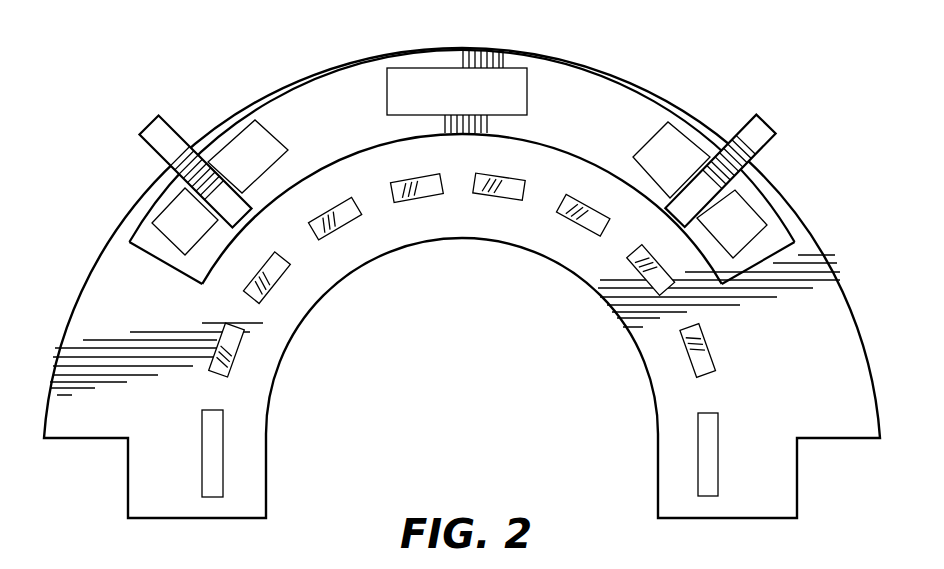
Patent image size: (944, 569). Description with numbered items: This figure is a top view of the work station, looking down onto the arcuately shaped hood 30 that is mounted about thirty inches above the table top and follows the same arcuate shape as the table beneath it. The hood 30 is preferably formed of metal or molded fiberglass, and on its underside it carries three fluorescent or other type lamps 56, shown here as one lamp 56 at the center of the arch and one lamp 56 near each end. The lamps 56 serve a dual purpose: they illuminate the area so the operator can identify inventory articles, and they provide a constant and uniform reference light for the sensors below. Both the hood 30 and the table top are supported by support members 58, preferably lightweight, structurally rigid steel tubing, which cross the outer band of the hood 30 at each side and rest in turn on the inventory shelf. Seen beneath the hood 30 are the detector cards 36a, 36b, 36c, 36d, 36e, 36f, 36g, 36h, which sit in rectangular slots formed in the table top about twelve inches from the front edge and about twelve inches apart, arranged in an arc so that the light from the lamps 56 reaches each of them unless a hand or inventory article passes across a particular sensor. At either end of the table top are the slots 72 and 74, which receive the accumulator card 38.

The hood 30 is at (770, 238).
The detector card 36a is at (247, 354).
The detector card 36b is at (284, 283).
The detector card 36c is at (348, 233).
The detector card 36d is at (425, 204).
The detector card 36e is at (498, 208).
The detector card 36f is at (571, 229).
The detector card 36g is at (633, 283).
The detector card 36h is at (678, 358).
The accumulator card 38 is at (239, 453).
The lamp 56 is at (237, 171).
The support member 58 is at (152, 121).
The slot 72 is at (202, 472).
The slot 74 is at (718, 478).